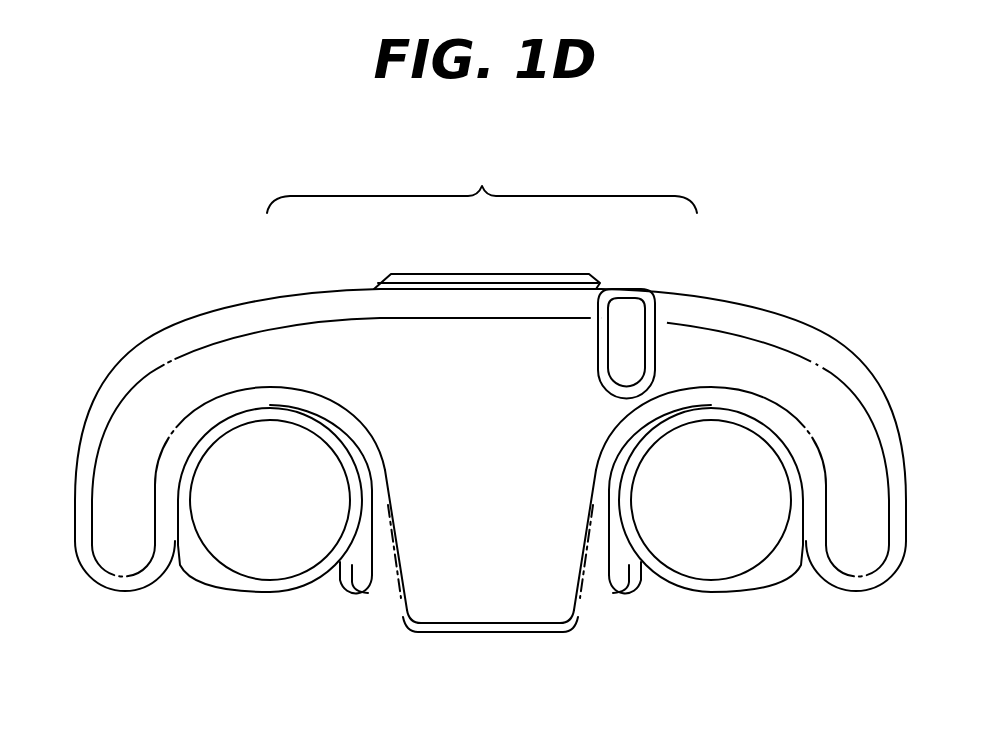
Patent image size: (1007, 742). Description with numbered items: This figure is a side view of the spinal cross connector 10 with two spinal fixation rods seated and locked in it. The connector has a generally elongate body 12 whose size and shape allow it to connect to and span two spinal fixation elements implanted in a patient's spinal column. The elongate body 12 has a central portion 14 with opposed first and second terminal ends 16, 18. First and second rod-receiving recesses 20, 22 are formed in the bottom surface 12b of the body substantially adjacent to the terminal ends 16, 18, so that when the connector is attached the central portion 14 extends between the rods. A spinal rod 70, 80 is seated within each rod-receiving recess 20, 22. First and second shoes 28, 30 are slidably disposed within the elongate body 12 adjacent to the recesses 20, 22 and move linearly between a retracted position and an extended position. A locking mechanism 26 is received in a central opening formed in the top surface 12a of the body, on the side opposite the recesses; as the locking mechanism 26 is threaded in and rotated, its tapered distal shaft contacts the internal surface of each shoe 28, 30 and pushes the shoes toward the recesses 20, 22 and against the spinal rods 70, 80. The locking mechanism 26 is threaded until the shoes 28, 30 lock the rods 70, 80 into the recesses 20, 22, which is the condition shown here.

The cross connector 10 is at (791, 186).
The elongate body 12 is at (455, 432).
The top surface 12a is at (320, 278).
The bottom surface 12b is at (498, 636).
The central portion 14 is at (482, 184).
The first terminal end 16 is at (133, 312).
The second terminal end 18 is at (835, 288).
The first rod-receiving recess 20 is at (177, 568).
The second rod-receiving recess 22 is at (810, 580).
The locking mechanism 26 is at (512, 280).
The first shoe 28 is at (364, 595).
The second shoe 30 is at (618, 597).
The spinal rod 70 is at (282, 506).
The spinal rod 80 is at (735, 506).